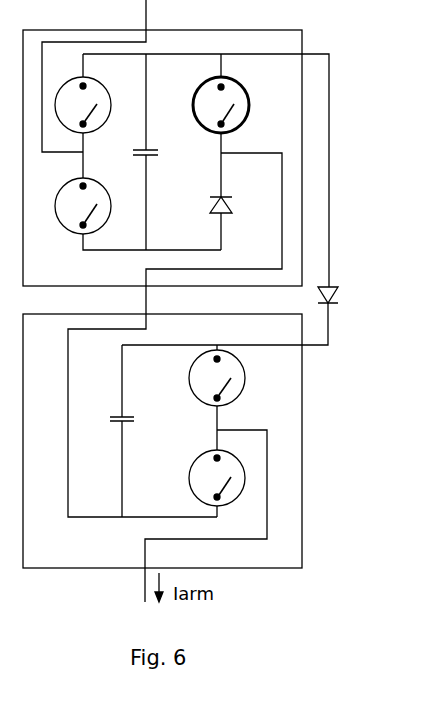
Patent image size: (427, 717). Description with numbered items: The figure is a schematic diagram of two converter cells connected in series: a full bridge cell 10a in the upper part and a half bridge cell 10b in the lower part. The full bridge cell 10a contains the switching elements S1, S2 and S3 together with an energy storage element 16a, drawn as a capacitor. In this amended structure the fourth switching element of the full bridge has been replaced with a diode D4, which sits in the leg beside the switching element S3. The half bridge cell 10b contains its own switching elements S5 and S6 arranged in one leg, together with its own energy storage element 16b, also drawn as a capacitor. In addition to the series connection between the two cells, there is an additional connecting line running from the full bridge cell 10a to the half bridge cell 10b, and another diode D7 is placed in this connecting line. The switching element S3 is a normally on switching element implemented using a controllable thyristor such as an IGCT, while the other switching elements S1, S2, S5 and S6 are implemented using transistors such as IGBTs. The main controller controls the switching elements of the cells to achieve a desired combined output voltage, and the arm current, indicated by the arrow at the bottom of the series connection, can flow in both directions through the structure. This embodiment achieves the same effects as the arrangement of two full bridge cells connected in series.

The full bridge cell 10a is at (302, 126).
The half bridge cell 10b is at (302, 452).
The energy storage element 16a is at (150, 153).
The energy storage element 16b is at (128, 421).
The switching element S1 is at (95, 116).
The switching element S2 is at (138, 210).
The normally on switching element S3 is at (237, 125).
The switching element S5 is at (237, 397).
The switching element S6 is at (227, 476).
The diode D4 is at (229, 206).
The diode D7 is at (338, 296).